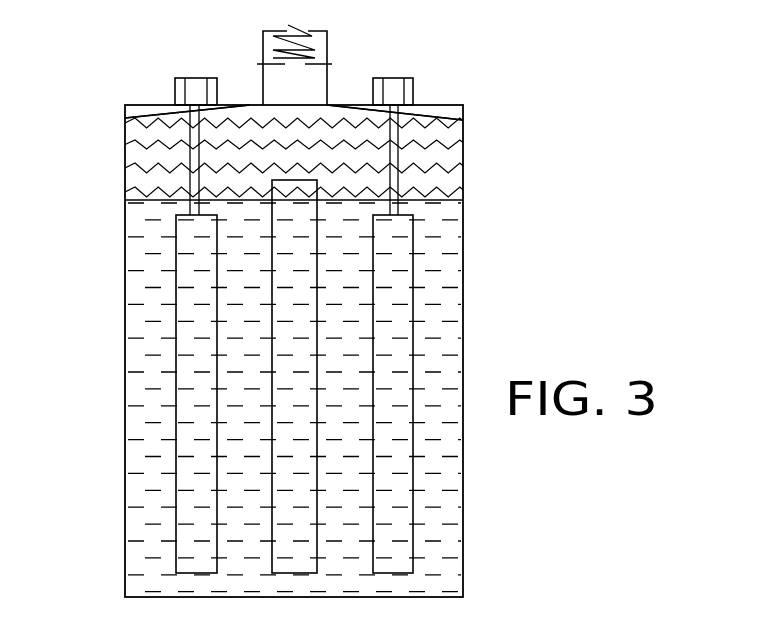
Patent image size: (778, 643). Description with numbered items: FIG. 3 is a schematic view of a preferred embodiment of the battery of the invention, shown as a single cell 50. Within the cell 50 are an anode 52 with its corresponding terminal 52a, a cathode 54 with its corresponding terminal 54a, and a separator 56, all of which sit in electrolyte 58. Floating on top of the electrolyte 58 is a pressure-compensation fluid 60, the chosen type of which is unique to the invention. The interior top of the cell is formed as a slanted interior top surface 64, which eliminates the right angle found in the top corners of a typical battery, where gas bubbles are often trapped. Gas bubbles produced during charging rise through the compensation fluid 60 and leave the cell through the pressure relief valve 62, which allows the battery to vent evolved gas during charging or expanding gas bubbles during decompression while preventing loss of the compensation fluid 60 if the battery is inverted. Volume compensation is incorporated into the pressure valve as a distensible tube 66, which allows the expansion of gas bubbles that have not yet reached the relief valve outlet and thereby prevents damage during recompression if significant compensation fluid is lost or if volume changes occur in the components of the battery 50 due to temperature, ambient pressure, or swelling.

The cell 50 is at (572, 316).
The anode 52 is at (403, 515).
The terminal 52a is at (395, 78).
The cathode 54 is at (182, 311).
The terminal 54a is at (188, 77).
The separator 56 is at (305, 560).
The electrolyte 58 is at (437, 270).
The pressure-compensation fluid 60 is at (438, 162).
The pressure relief valve 62 is at (302, 35).
The slanted interior top surface 64 is at (154, 102).
The distensible tube 66 is at (307, 78).